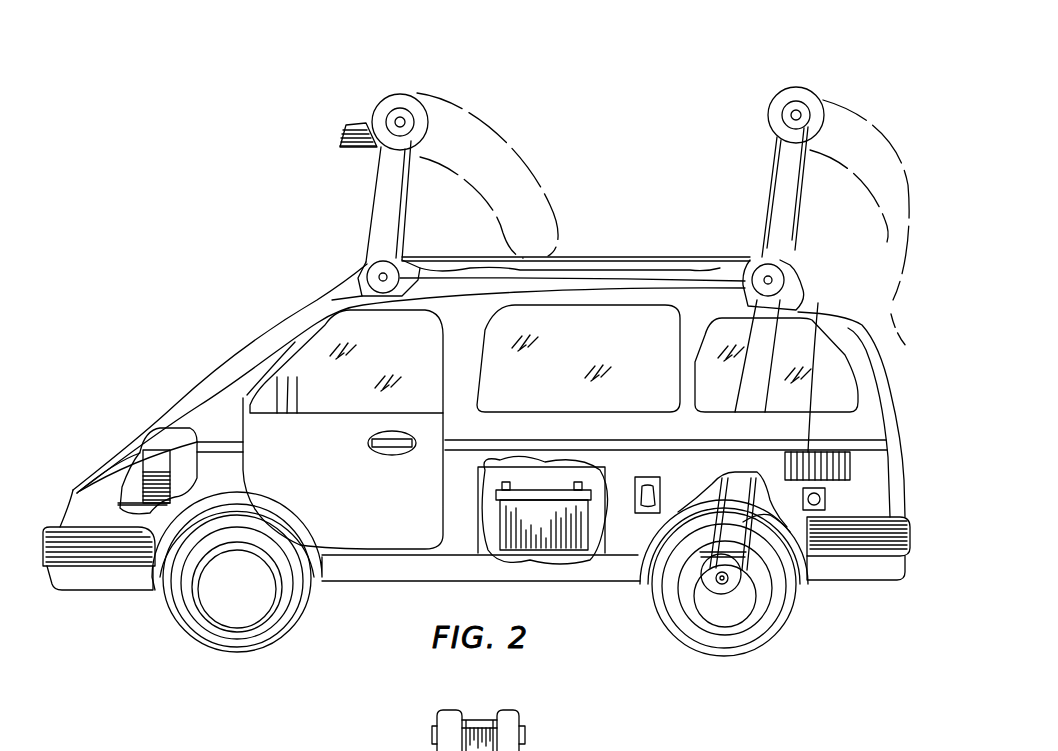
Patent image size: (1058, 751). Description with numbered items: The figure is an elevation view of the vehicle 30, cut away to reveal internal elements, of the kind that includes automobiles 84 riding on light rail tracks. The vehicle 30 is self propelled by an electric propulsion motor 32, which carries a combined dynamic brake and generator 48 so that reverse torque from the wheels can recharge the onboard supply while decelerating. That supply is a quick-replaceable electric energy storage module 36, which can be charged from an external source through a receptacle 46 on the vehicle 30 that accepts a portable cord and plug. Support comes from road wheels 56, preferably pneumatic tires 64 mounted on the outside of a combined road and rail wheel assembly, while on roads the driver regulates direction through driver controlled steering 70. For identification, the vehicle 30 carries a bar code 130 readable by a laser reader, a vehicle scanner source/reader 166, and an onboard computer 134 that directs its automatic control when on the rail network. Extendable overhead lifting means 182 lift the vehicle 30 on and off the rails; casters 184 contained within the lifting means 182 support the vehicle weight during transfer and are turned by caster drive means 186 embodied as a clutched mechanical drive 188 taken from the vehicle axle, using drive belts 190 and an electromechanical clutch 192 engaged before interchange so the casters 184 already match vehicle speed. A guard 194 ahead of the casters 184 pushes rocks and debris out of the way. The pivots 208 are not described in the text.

The vehicle 30 is at (213, 374).
The electric propulsion motor 32 is at (816, 510).
The electric energy storage module 36 is at (565, 558).
The receptacle 46 is at (655, 616).
The combined dynamic brake and generator 48 is at (766, 556).
The road wheels 56 is at (218, 658).
The pneumatic tires 64 is at (303, 614).
The driver controlled steering 70 is at (287, 403).
The automobiles 84 is at (125, 438).
The bar code 130 is at (813, 303).
The onboard computer 134 is at (143, 510).
The vehicle scanner source/reader 166 is at (782, 530).
The extendable overhead lifting means 182 is at (374, 192).
The casters 184 is at (384, 99).
The caster drive means 186 is at (478, 264).
The clutched mechanical drive 188 is at (705, 572).
The drive belts 190 is at (694, 258).
The electromechanical clutch 192 is at (689, 592).
The guard 194 is at (340, 140).
The pivot 208 is at (368, 226).